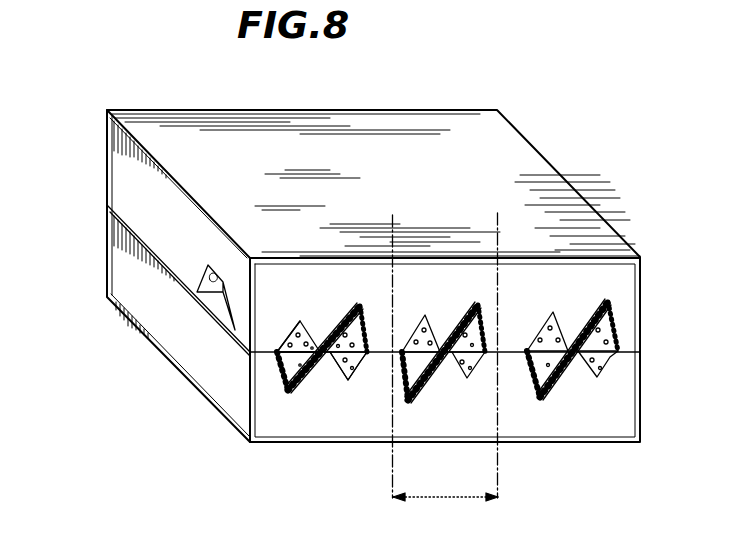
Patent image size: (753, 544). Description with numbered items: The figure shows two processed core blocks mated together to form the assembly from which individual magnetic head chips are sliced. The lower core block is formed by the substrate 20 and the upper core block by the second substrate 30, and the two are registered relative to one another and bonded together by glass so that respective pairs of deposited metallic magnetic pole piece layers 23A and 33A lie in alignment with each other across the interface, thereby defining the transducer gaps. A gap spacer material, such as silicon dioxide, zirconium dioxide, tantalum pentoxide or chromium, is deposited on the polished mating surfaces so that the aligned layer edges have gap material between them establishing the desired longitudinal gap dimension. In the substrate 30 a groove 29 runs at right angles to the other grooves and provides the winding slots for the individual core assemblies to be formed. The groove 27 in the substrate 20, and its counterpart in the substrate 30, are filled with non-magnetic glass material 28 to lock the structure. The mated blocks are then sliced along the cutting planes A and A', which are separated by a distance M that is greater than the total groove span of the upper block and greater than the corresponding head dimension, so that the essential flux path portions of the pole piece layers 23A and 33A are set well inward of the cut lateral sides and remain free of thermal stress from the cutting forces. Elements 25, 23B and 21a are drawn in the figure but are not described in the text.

The second substrate 30 is at (125, 172).
The substrate 20 is at (123, 267).
The groove 29 is at (212, 282).
The groove 27 is at (350, 390).
The non-magnetic glass material 28 is at (343, 357).
The edge of element 25 is at (277, 357).
The pole piece layers 23A is at (308, 368).
The ridge band 23B is at (403, 372).
The pole piece layers 33A is at (457, 333).
The lower facet 21a is at (550, 370).
The slicing line A— A is at (392, 363).
The slicing line A'— A' is at (501, 361).
The separation M is at (445, 486).